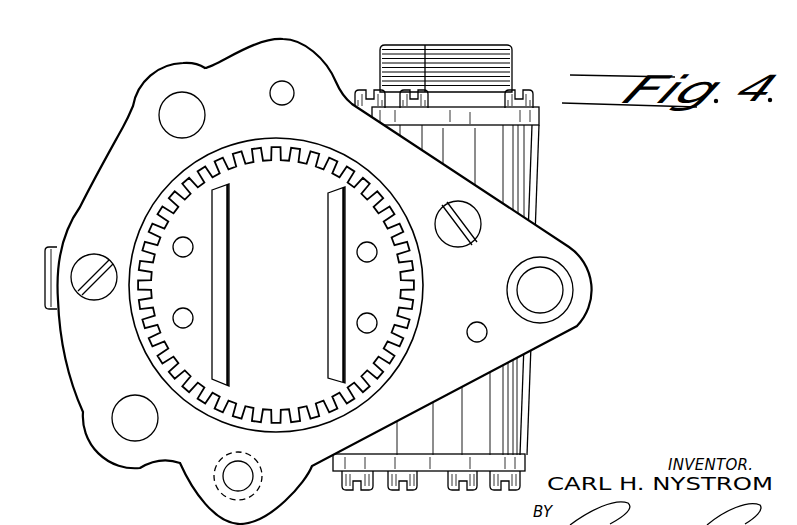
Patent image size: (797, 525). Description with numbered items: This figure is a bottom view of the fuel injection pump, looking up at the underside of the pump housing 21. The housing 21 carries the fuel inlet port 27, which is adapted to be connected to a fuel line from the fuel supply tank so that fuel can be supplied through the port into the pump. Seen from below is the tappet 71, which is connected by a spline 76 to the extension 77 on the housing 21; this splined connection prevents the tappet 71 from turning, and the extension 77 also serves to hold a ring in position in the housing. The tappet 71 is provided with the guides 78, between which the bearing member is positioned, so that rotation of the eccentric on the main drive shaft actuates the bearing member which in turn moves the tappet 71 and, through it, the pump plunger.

The pump housing 21 is at (493, 158).
The fuel inlet port 27 is at (289, 85).
The tappet 71 is at (173, 293).
The spline 76 is at (160, 203).
The extension 77 is at (185, 173).
The guides 78 is at (333, 263).